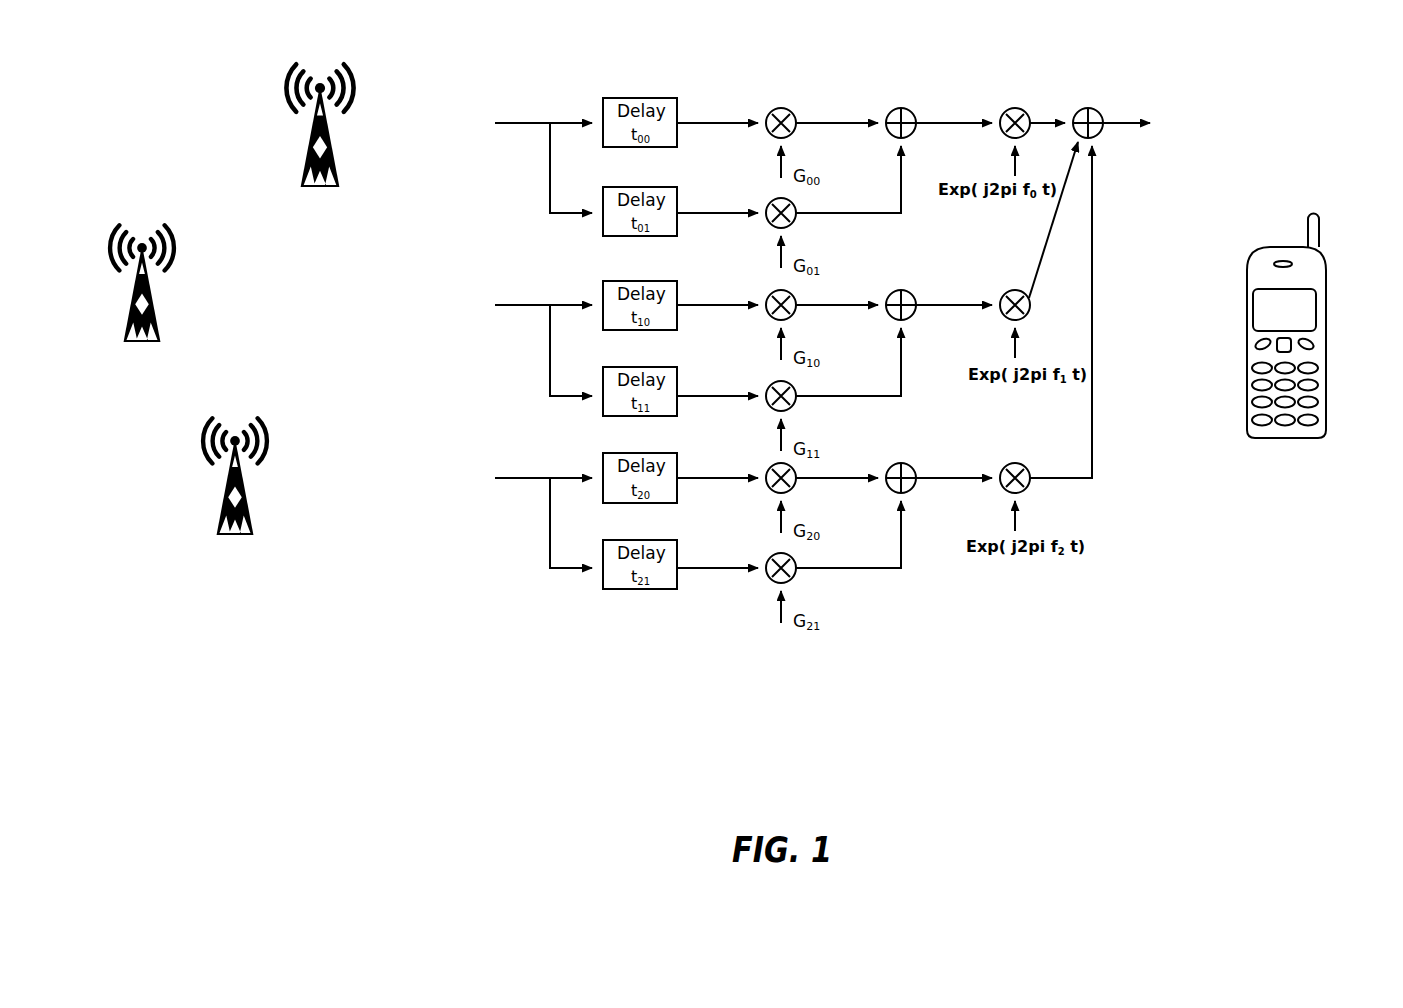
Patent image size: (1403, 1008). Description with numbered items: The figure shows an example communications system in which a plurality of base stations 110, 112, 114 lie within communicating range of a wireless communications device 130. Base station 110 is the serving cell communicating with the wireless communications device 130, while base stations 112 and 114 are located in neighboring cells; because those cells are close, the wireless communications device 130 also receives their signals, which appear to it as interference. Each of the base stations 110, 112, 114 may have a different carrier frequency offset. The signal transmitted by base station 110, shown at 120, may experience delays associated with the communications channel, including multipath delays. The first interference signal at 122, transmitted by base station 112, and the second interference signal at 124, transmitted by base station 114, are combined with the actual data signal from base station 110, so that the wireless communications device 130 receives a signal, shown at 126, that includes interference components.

The base station 110 is at (334, 152).
The base station 112 is at (150, 315).
The base station 114 is at (243, 507).
The signal S(t) transmitted by base station 120 is at (497, 122).
The interference signal i1(t) 122 is at (497, 304).
The interference signal i2(t) 124 is at (497, 477).
The received signal r(t) 126 is at (1120, 122).
The wireless communications device 130 is at (1325, 320).